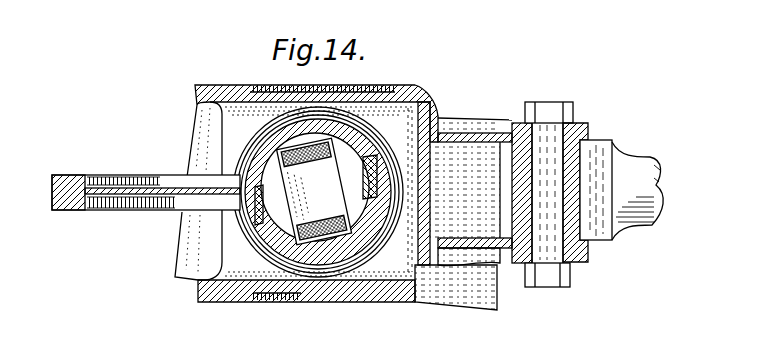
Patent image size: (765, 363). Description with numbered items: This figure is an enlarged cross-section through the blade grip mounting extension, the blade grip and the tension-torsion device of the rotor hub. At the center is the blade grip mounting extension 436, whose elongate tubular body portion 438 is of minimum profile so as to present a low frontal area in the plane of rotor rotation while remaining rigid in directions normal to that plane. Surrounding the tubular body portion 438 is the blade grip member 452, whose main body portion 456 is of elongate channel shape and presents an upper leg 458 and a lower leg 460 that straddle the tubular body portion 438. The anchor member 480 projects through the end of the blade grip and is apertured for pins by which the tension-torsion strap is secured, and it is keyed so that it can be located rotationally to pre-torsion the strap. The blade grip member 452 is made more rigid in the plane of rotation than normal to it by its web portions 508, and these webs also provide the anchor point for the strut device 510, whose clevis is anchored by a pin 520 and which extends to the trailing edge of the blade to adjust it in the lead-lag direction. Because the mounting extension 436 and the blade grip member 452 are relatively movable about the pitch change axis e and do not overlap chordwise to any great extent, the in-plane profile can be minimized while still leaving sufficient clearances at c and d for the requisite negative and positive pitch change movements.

The blade grip mounting extension 436 is at (118, 172).
The tubular body portion 438 is at (267, 140).
The blade grip member 452 is at (434, 94).
The main body portion 456 is at (427, 168).
The upper leg 458 is at (343, 102).
The lower leg 460 is at (327, 288).
The anchor member 480 is at (343, 160).
The web portion 508 is at (492, 137).
The strut device 510 is at (650, 231).
The pin 520 is at (548, 107).
The clearance c is at (203, 110).
The clearance d is at (199, 269).
The axis e is at (313, 190).